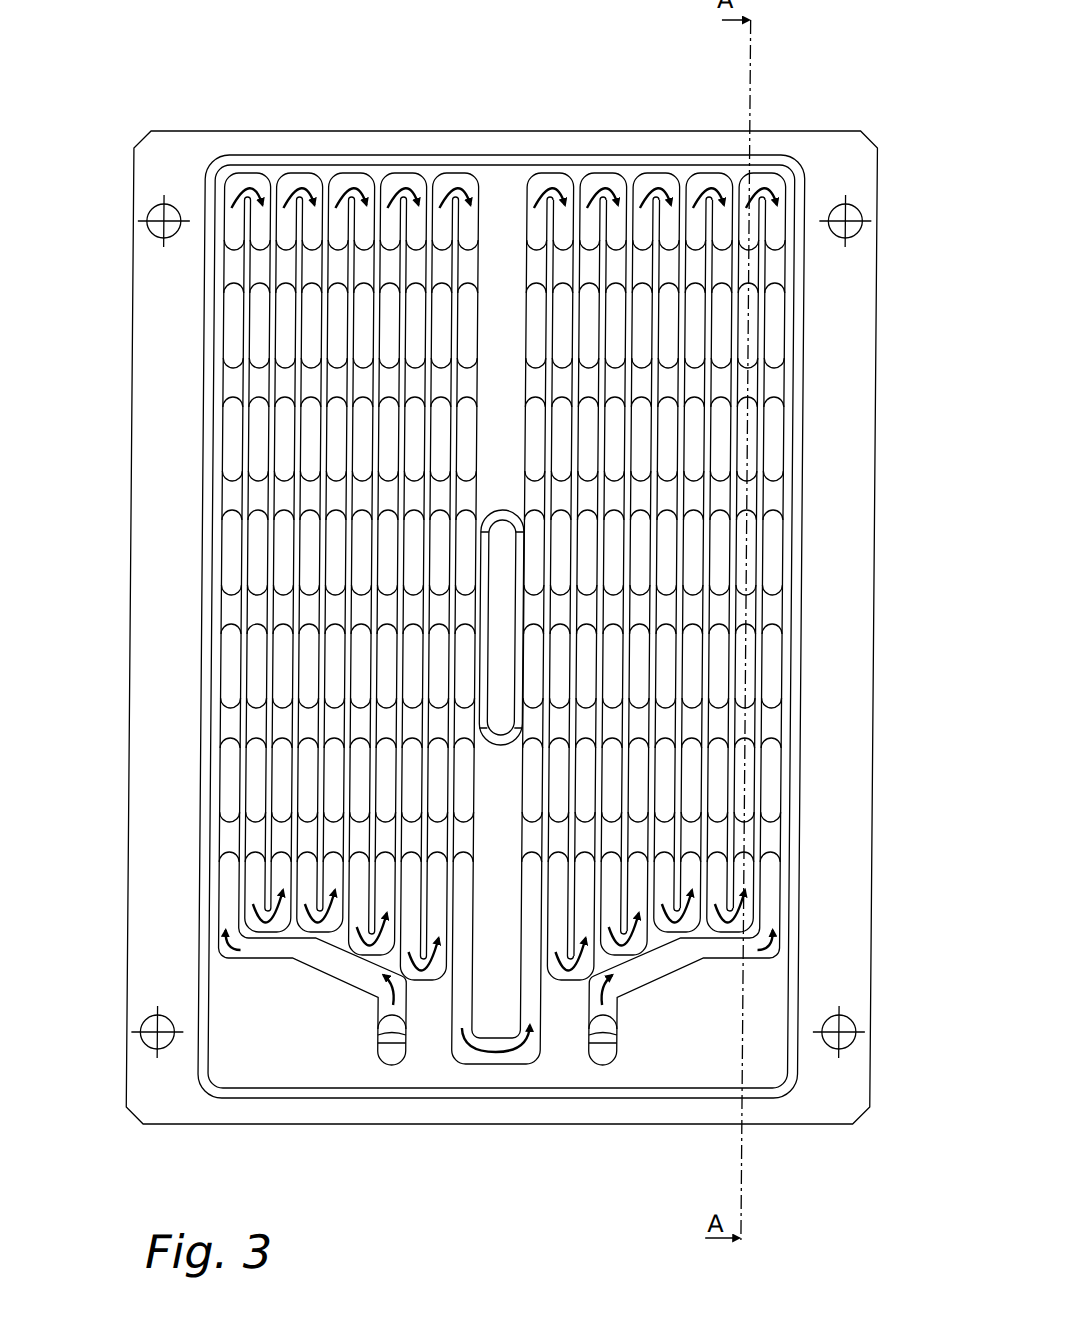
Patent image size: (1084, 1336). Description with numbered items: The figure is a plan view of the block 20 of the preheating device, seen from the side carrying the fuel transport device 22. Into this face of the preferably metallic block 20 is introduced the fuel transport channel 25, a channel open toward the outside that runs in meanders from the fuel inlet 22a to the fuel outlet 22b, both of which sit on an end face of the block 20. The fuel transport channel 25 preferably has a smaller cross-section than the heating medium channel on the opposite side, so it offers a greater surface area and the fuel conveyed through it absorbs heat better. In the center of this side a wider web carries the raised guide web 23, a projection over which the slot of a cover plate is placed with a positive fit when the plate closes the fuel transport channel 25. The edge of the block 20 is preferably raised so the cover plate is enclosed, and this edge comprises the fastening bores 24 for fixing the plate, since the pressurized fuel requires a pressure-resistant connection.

The block 20 is at (464, 1125).
The fuel transport device 22 is at (334, 1059).
The fuel inlet 22a is at (397, 1062).
The fuel outlet 22b is at (606, 1060).
The guide web 23 is at (497, 746).
The fastening bores 24 is at (160, 223).
The fuel transport channel 25 is at (238, 605).